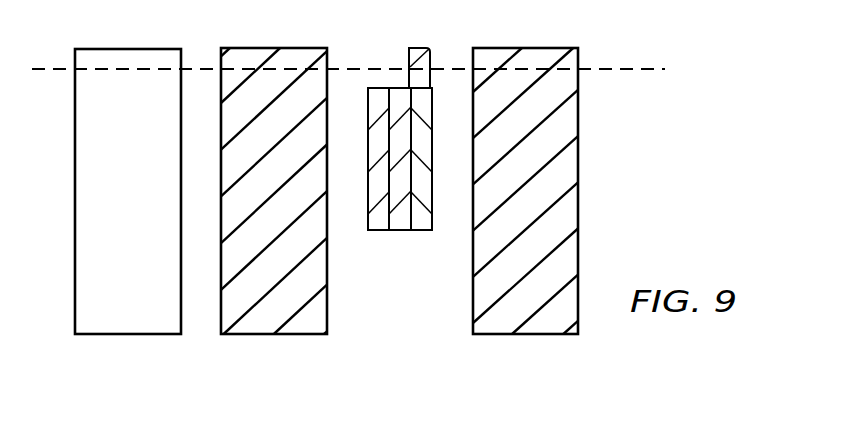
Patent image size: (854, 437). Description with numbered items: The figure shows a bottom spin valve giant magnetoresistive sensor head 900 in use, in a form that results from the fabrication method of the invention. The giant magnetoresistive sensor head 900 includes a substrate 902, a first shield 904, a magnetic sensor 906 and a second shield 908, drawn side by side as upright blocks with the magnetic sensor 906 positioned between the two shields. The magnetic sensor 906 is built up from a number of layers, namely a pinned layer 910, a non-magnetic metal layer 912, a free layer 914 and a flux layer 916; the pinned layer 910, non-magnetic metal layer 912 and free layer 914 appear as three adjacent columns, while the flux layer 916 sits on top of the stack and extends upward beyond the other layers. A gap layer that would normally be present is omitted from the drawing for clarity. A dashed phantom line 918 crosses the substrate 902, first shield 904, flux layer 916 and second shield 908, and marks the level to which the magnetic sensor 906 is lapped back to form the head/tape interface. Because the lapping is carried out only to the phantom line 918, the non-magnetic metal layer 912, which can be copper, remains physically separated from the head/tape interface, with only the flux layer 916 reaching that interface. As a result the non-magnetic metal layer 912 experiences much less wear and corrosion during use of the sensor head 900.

The giant magnetoresistive sensor head 900 is at (722, 42).
The substrate 902 is at (128, 335).
The first shield 904 is at (260, 334).
The magnetic sensor 906 is at (396, 231).
The second shield 908 is at (548, 334).
The pinned layer 910 is at (375, 231).
The non-magnetic metal layer 912 is at (405, 88).
The free layer 914 is at (424, 231).
The flux layer 916 is at (417, 48).
The phantom line 918 is at (623, 70).